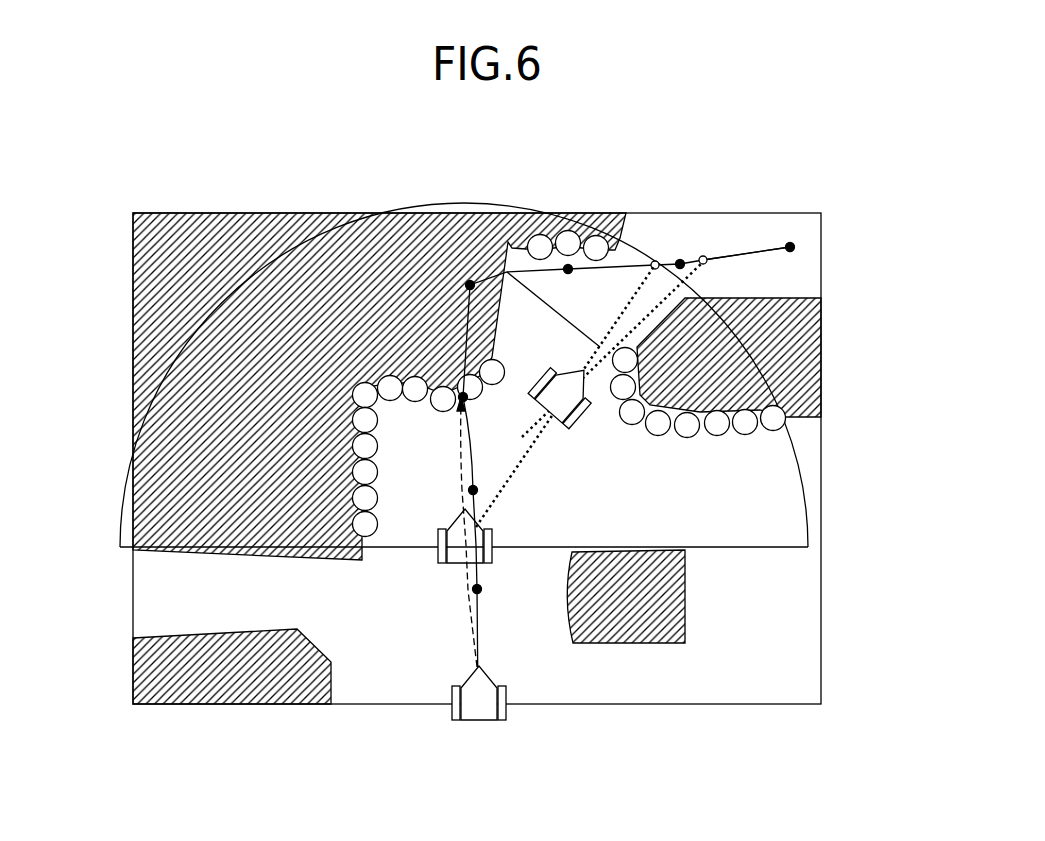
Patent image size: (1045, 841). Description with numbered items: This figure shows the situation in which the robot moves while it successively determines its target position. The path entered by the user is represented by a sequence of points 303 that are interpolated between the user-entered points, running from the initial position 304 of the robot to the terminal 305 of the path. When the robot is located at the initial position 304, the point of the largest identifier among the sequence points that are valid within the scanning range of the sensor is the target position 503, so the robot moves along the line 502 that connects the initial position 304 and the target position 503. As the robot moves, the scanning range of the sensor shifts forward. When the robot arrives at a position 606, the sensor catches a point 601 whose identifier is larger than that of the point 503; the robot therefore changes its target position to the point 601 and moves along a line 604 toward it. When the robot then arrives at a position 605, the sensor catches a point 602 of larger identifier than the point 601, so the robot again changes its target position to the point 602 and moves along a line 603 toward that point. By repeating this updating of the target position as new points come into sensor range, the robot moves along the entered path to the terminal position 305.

The sequence of points 303 is at (763, 247).
The initial position 304 is at (482, 706).
The terminal of the path 305 is at (790, 247).
The line 502 is at (353, 462).
The target position 503 is at (463, 397).
The point 601 is at (655, 265).
The point 602 is at (703, 260).
The line 603 is at (663, 298).
The line 604 is at (510, 245).
The position 605 is at (565, 402).
The position 606 is at (480, 543).